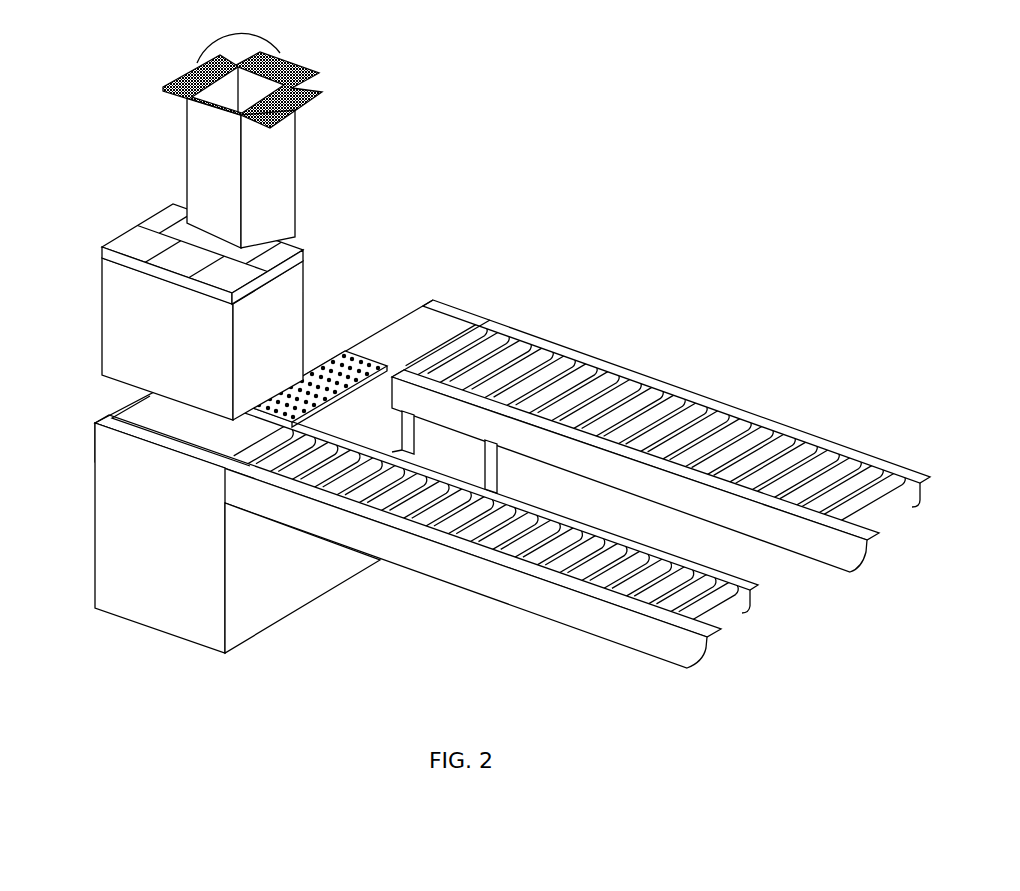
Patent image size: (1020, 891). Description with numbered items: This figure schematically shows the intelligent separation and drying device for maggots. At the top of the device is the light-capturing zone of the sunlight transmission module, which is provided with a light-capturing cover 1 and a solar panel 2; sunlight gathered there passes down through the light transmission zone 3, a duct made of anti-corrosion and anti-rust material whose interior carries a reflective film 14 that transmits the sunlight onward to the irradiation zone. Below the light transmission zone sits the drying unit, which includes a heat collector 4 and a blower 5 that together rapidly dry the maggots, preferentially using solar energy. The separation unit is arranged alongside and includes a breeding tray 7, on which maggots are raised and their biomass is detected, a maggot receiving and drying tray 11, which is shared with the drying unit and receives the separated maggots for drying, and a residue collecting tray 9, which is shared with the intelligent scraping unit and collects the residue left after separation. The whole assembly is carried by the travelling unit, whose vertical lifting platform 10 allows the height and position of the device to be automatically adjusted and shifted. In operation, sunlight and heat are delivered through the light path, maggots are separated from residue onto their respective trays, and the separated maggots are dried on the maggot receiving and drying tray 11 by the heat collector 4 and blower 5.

The light-capturing cover 1 is at (237, 38).
The solar panel 2 is at (209, 90).
The light transmission zone 3 is at (197, 157).
The heat collector 4 is at (162, 243).
The blower 5 is at (163, 339).
The breeding tray 7 is at (364, 318).
The residue collecting tray 9 is at (590, 422).
The vertical lifting platform 10 is at (131, 414).
The maggot receiving and drying tray 11 is at (476, 397).
The reflective film 14 is at (204, 542).